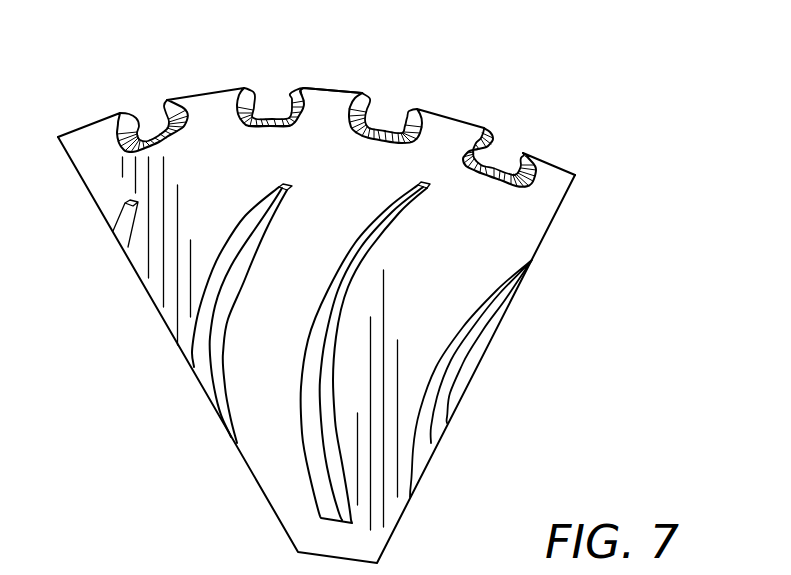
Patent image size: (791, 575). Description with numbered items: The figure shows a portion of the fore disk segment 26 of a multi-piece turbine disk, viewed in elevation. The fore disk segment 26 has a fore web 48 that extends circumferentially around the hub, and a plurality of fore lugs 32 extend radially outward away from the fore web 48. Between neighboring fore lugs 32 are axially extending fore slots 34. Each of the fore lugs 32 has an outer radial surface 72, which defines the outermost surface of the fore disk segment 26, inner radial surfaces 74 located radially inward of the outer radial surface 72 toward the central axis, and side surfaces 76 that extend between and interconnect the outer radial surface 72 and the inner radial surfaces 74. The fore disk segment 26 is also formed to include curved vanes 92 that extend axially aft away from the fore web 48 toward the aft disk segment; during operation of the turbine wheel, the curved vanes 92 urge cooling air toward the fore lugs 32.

The fore disk segment 26 is at (500, 97).
The fore lugs 32 is at (197, 76).
The fore slots 34 is at (266, 86).
The fore web 48 is at (262, 416).
The outer radial surface 72 is at (311, 88).
The inner radial surfaces 74 is at (247, 127).
The side surfaces 76 is at (374, 103).
The curved vanes 92 is at (264, 245).